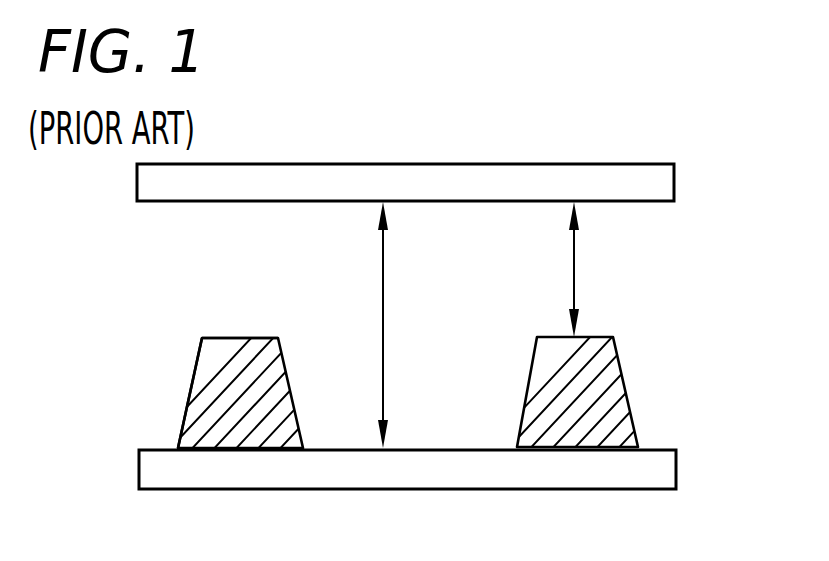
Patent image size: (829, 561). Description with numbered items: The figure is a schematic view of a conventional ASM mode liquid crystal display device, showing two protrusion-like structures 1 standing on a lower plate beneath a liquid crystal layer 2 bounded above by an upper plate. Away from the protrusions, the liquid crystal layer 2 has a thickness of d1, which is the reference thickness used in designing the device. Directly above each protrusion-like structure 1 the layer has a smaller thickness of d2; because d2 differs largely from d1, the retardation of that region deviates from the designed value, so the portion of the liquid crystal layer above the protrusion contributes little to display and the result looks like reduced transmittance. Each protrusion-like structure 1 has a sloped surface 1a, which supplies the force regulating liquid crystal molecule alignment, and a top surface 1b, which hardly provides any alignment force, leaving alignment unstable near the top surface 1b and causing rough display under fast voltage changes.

The protrusion-like structure 1 is at (587, 402).
The sloped surface 1a is at (190, 393).
The top surface 1b is at (215, 337).
The liquid crystal layer 2 is at (497, 260).
The thickness of the liquid crystal layer d1 is at (383, 350).
The thickness directly above the protrusion-like structure d2 is at (574, 260).